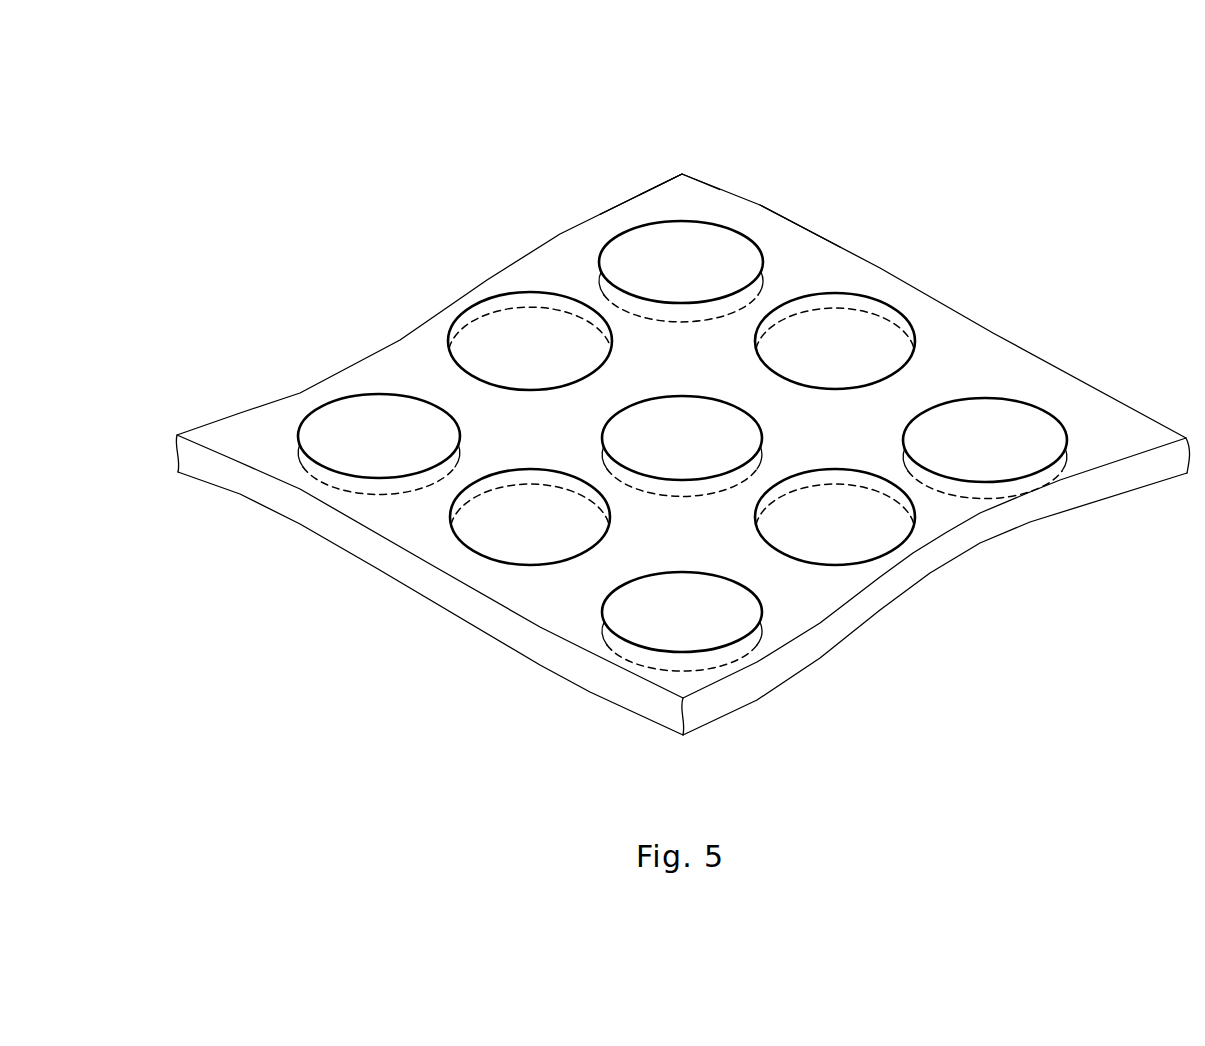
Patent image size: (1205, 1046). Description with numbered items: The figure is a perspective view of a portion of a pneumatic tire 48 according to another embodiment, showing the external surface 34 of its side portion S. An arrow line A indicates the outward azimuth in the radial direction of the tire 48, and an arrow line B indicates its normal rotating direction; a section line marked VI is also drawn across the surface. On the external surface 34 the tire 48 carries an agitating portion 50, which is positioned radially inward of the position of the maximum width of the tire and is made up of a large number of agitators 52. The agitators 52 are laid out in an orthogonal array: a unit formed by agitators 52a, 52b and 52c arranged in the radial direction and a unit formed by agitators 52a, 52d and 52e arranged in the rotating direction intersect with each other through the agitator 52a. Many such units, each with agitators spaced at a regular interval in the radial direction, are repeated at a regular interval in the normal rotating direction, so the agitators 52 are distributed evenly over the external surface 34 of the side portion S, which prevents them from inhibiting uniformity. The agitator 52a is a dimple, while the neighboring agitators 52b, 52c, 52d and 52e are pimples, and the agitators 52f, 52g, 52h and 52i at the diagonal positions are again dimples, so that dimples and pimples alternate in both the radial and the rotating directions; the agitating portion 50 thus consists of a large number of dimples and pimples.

The external surface 34 is at (683, 190).
The pneumatic tire 48 is at (873, 138).
The agitating portion 50 is at (1067, 371).
The agitators 52 is at (686, 466).
The agitator 52a is at (705, 397).
The agitator 52b is at (887, 497).
The agitator 52c is at (503, 310).
The agitator 52d is at (460, 487).
The agitator 52e is at (900, 327).
The agitator 52f is at (352, 393).
The agitator 52g is at (728, 650).
The agitator 52h is at (1037, 472).
The agitator 52i is at (705, 222).
The side portion S is at (603, 166).
The arrow line A is at (1085, 263).
The arrow line B is at (380, 143).
The section line VI- VI is at (430, 290).